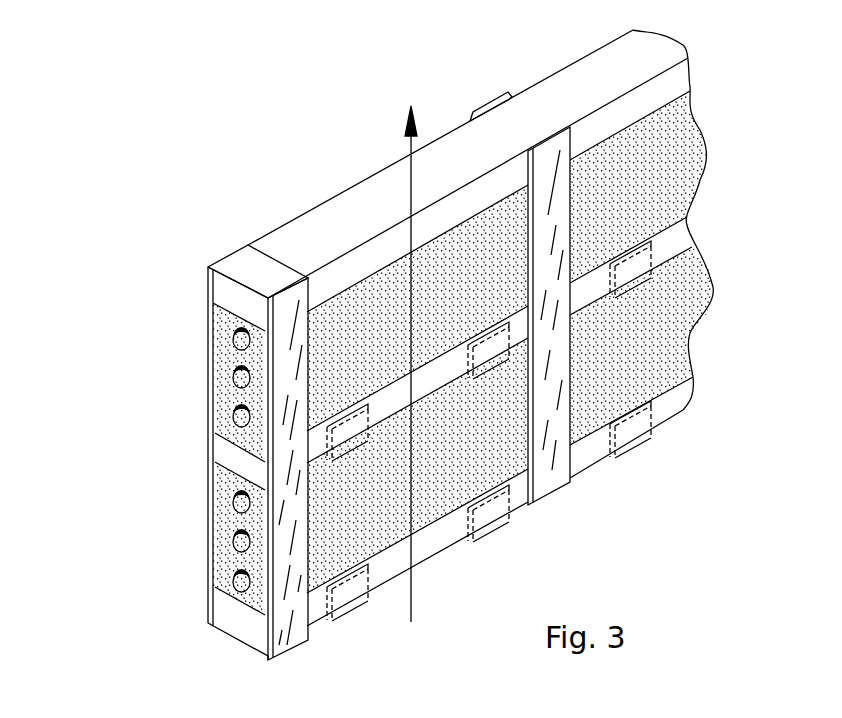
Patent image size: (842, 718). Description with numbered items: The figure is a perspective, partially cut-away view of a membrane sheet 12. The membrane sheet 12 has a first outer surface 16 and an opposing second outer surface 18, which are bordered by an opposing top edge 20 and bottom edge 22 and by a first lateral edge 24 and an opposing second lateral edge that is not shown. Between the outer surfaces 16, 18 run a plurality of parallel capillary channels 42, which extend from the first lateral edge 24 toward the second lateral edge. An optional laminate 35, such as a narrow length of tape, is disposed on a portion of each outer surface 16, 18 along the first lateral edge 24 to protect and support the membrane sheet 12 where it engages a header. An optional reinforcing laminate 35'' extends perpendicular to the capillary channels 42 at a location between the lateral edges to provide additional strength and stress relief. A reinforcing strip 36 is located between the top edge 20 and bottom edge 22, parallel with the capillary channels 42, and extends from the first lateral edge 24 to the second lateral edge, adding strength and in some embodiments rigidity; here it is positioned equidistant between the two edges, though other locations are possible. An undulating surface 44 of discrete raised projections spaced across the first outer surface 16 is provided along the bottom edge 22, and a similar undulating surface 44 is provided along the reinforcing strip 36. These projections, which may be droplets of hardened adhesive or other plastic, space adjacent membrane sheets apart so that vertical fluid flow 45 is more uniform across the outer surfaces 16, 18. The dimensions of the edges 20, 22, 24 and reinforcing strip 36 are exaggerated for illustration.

The membrane sheet 12 is at (172, 96).
The first outer surface 16 is at (690, 125).
The second outer surface 18 is at (572, 42).
The top edge 20 is at (388, 198).
The bottom edge 22 is at (443, 551).
The first lateral edge 24 is at (228, 392).
The laminate 35 is at (254, 456).
The reinforcing laminate 35'' is at (535, 306).
The reinforcing strip 36 is at (233, 458).
The capillary channels 42 is at (232, 415).
The undulating surface 44 is at (650, 262).
The vertical fluid flow 45 is at (412, 592).